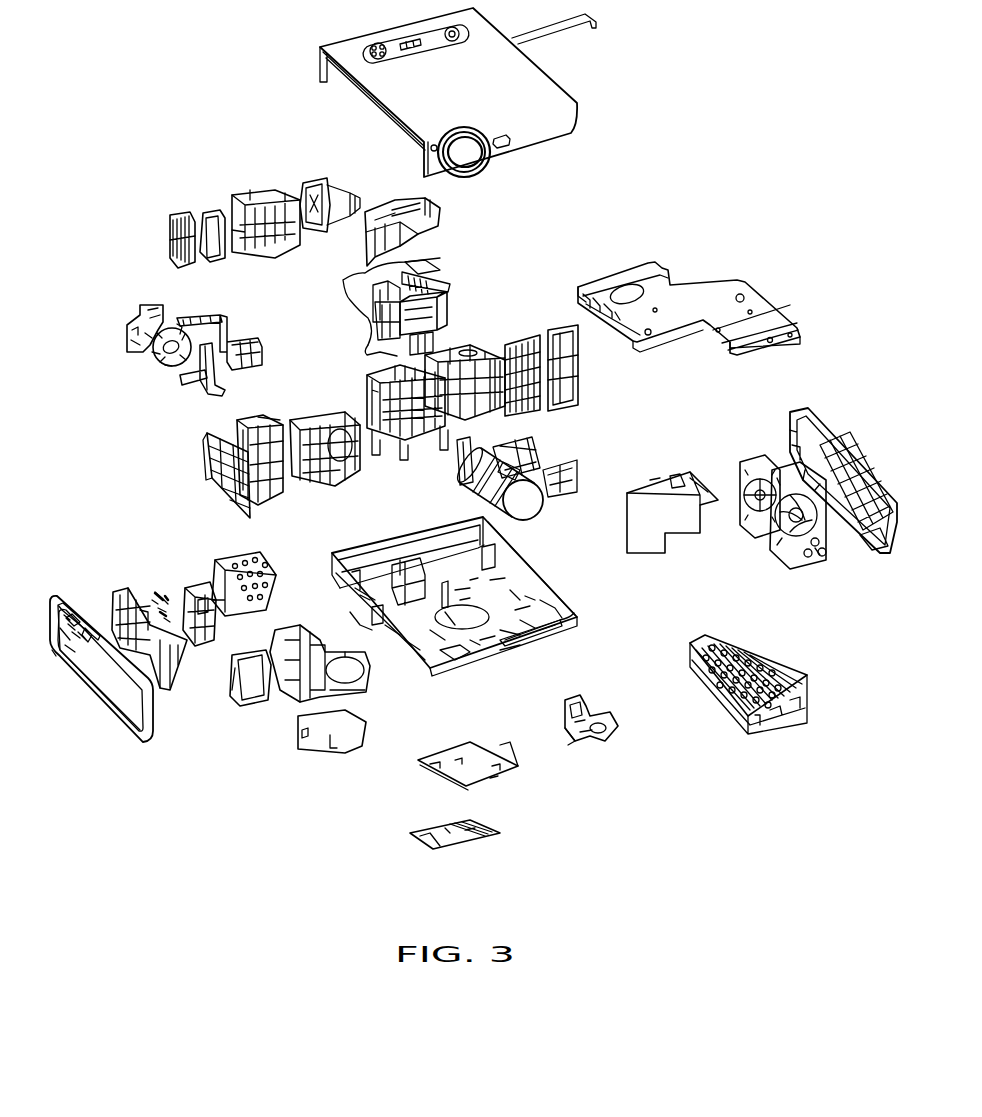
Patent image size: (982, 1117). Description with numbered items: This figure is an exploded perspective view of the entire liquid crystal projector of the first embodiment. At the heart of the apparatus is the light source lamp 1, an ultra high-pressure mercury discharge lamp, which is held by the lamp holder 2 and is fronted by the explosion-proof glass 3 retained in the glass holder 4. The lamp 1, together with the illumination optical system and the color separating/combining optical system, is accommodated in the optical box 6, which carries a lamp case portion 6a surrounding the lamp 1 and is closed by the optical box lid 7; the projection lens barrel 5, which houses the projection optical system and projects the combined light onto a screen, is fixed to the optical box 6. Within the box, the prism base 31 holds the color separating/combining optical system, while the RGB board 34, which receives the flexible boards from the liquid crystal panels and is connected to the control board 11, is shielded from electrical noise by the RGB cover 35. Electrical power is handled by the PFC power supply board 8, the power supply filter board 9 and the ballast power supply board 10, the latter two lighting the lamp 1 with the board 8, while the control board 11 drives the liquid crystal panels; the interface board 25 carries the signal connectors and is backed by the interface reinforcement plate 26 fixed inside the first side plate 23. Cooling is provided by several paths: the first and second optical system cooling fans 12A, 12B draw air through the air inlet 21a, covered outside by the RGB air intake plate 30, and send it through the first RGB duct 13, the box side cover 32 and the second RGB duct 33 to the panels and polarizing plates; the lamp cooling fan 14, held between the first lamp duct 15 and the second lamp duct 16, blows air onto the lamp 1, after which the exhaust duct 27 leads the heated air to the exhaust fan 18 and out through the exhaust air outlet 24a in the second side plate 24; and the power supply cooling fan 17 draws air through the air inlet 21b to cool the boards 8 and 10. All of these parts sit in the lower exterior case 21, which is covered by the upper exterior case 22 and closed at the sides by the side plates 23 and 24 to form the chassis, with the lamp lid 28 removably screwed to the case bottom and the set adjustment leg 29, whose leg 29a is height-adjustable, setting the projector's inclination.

The light source lamp 1 is at (315, 182).
The lamp holder 2 is at (250, 190).
The explosion-proof glass 3 is at (207, 212).
The glass holder 4 is at (172, 214).
The projection lens barrel 5 is at (460, 475).
The optical box 6 is at (400, 458).
The lamp case portion 6a is at (490, 346).
The optical box lid 7 is at (440, 218).
The PFC power supply board 8 is at (740, 640).
The power supply filter board 9 is at (222, 560).
The ballast power supply board 10 is at (713, 695).
The control board 11 is at (740, 288).
The first optical system cooling fan 12A is at (245, 700).
The second optical system cooling fan 12B is at (300, 745).
The first RGB duct 13 is at (308, 645).
The lamp cooling fan 14 is at (152, 372).
The first lamp duct 15 is at (215, 392).
The second lamp duct 16 is at (145, 305).
The power supply cooling fan 17 is at (772, 535).
The exhaust fan 18 is at (748, 520).
The lower exterior case 21 is at (548, 610).
The air inlet 21a is at (455, 652).
The air inlet 21b is at (520, 640).
The upper exterior case 22 is at (557, 103).
The first side plate 23 is at (125, 710).
The second side plate 24 is at (805, 412).
The exhaust air outlet 24a is at (865, 550).
The interface board 25 is at (212, 642).
The interface reinforcement plate 26 is at (172, 700).
The exhaust duct 27 is at (643, 540).
The lamp lid 28 is at (505, 770).
The set adjustment leg 29 is at (605, 718).
The leg 29a is at (572, 732).
The RGB air intake plate 30 is at (492, 840).
The prism base 31 is at (312, 486).
The box side cover 32 is at (278, 503).
The second RGB duct 33 is at (208, 476).
The RGB board 34 is at (563, 406).
The RGB cover 35 is at (535, 410).